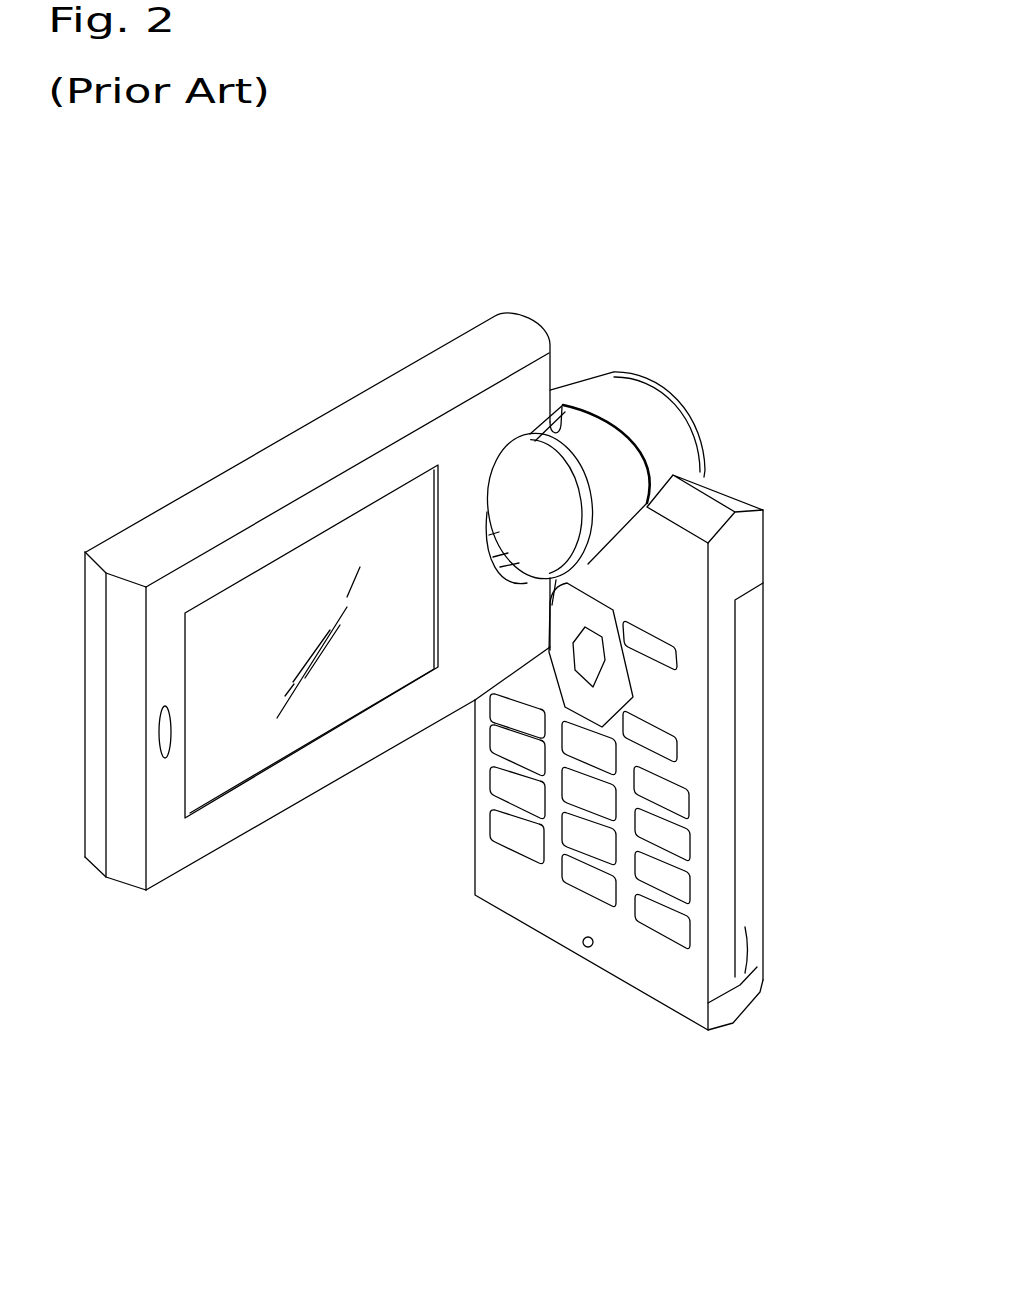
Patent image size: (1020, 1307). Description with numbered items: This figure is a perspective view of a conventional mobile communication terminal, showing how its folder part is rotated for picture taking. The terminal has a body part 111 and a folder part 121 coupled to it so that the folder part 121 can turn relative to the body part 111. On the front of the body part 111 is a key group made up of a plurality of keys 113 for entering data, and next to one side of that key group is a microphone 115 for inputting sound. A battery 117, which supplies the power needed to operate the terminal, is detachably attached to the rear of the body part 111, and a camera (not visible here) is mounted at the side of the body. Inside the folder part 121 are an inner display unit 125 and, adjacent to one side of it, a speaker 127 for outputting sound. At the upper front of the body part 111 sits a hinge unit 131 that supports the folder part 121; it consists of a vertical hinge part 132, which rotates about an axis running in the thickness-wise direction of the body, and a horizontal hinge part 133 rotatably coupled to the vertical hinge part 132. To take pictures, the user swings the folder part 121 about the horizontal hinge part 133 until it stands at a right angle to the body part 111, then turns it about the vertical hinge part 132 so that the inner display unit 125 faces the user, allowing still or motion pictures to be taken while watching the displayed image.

The body part 111 is at (613, 844).
The keys 113 is at (521, 843).
The microphone 115 is at (585, 948).
The battery 117 is at (707, 1002).
The folder part 121 is at (317, 601).
The inner display unit 125 is at (232, 623).
The speaker 127 is at (166, 706).
The hinge unit 131 is at (591, 408).
The vertical hinge part 132 is at (592, 461).
The horizontal hinge part 133 is at (557, 403).